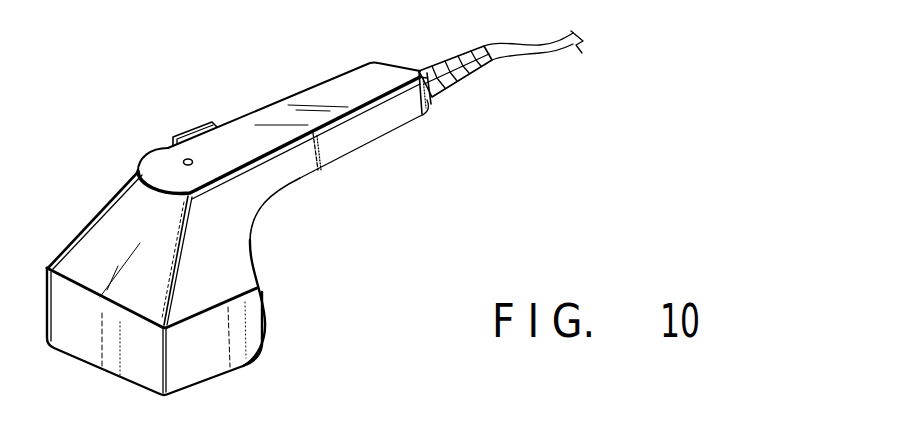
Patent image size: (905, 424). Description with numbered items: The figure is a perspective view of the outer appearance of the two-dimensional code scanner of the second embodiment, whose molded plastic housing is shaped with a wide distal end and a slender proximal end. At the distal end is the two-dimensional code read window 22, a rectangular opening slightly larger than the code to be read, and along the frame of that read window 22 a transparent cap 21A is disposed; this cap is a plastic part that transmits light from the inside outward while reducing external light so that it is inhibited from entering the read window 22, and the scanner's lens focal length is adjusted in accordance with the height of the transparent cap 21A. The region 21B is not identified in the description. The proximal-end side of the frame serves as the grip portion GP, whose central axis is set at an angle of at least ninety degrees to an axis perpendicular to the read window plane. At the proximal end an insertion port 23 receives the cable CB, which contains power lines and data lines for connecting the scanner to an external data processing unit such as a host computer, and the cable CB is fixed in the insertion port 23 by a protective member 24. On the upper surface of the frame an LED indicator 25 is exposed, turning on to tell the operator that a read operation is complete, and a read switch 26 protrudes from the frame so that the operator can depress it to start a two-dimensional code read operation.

The transparent cap 21A is at (263, 291).
The neck portion of handle 21B is at (252, 238).
The 2-dimensional code read window 22 is at (243, 366).
The insertion port 23 is at (434, 90).
The protective member 24 is at (443, 69).
The LED indicator 25 is at (183, 162).
The read switch 26 is at (178, 137).
The grip portion GP is at (428, 112).
The cable CB is at (534, 53).